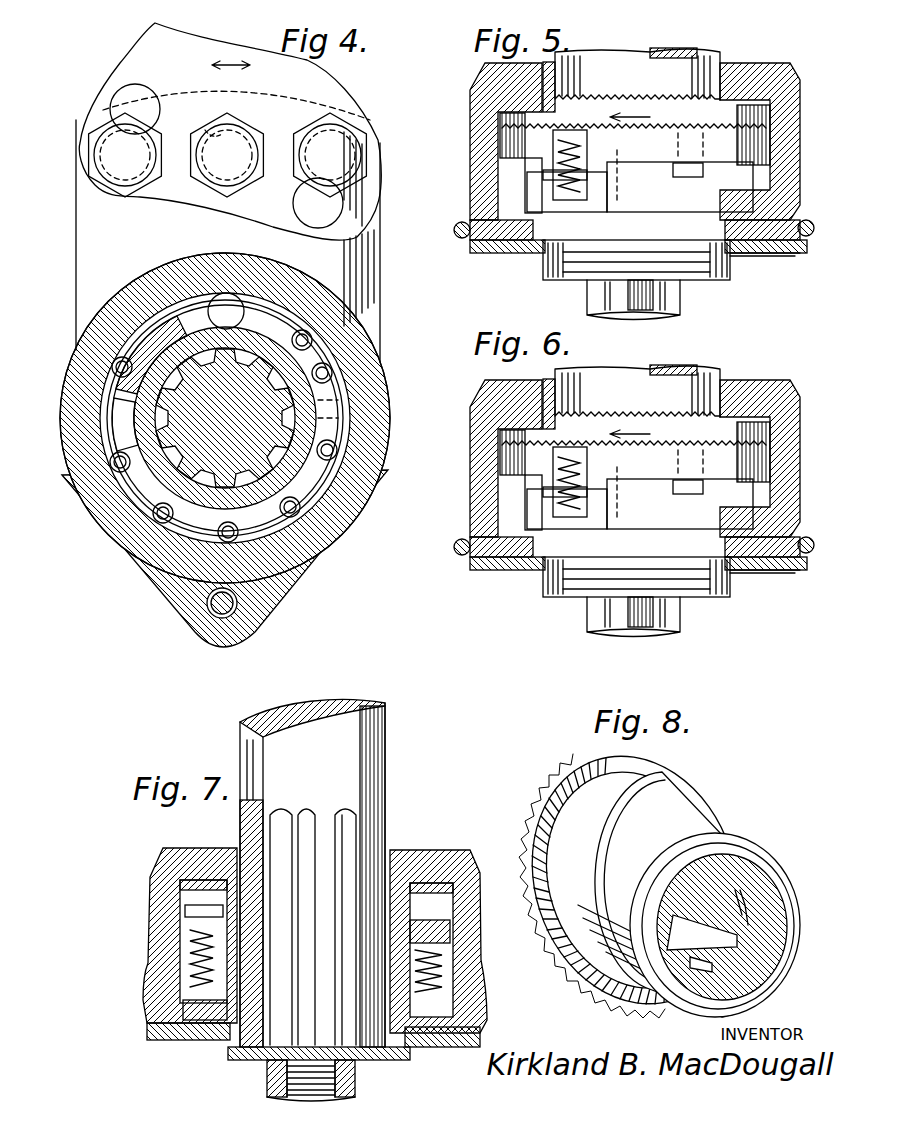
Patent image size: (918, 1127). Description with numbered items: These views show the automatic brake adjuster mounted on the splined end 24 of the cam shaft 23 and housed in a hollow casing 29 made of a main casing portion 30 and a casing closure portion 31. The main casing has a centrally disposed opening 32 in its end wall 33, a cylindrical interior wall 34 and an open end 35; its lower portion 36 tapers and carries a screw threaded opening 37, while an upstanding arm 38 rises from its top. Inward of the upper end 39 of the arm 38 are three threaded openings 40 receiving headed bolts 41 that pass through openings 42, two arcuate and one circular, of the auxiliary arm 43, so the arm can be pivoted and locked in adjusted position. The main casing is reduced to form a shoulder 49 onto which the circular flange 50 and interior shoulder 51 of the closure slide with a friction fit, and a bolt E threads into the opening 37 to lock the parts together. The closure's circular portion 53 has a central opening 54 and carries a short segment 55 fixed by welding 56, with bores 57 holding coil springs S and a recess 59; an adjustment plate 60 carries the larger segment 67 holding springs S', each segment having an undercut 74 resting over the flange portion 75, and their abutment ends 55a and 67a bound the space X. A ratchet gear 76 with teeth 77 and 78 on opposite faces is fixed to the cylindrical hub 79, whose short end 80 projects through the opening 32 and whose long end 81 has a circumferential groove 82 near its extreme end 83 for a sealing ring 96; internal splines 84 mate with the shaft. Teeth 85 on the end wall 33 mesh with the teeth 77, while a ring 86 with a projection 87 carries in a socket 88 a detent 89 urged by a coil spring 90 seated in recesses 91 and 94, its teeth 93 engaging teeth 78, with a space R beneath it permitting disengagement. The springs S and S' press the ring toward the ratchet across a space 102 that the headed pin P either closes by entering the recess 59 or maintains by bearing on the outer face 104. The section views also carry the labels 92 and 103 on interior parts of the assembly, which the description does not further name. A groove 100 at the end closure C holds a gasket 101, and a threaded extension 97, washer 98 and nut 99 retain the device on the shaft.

In FIG. 4, the cam shaft 23 is at (246, 500).
In FIG. 5, the cam shaft 23 is at (700, 52).
In FIG. 6, the cam shaft 23 is at (700, 369).
In FIG. 7, the cam shaft 23 is at (386, 762).
In FIG. 4, the splined end 24 is at (262, 352).
In FIG. 7, the splined end 24 is at (300, 816).
In FIG. 4, the hollow casing 29 is at (386, 454).
In FIG. 5, the hollow casing 29 is at (800, 164).
In FIG. 6, the hollow casing 29 is at (800, 396).
In FIG. 7, the hollow casing 29 is at (470, 852).
In FIG. 4, the main casing portion 30 is at (352, 510).
In FIG. 5, the main casing portion 30 is at (800, 88).
In FIG. 6, the main casing portion 30 is at (800, 421).
In FIG. 7, the main casing portion 30 is at (155, 862).
In FIG. 5, the casing closure portion 31 is at (800, 216).
In FIG. 6, the casing closure portion 31 is at (800, 531).
In FIG. 7, the casing closure portion 31 is at (150, 996).
In FIG. 5, the centrally disposed opening 32 is at (736, 65).
In FIG. 6, the centrally disposed opening 32 is at (736, 382).
In FIG. 7, the centrally disposed opening 32 is at (400, 850).
In FIG. 5, the longitudinal end wall 33 is at (762, 65).
In FIG. 6, the longitudinal end wall 33 is at (762, 382).
In FIG. 7, the longitudinal end wall 33 is at (430, 856).
In FIG. 4, the cylindrical interior wall 34 is at (355, 410).
In FIG. 5, the cylindrical interior wall 34 is at (470, 130).
In FIG. 6, the cylindrical interior wall 34 is at (470, 420).
In FIG. 7, the cylindrical interior wall 34 is at (180, 892).
In FIG. 5, the open end 35 is at (800, 192).
In FIG. 6, the open end 35 is at (800, 506).
In FIG. 7, the open end 35 is at (474, 976).
In FIG. 4, the lower portion 36 is at (272, 598).
In FIG. 4, the screw threaded opening 37 is at (214, 610).
In FIG. 4, the arm 38 is at (378, 312).
In FIG. 4, the upper end 39 is at (330, 96).
In FIG. 4, the threaded openings 40 is at (90, 152).
In FIG. 4, the headed bolts 41 is at (92, 178).
In FIG. 4, the openings 42 is at (108, 108).
In FIG. 4, the auxiliary arm 43 is at (220, 58).
In FIG. 5, the shoulder 49 is at (470, 186).
In FIG. 6, the shoulder 49 is at (470, 501).
In FIG. 7, the shoulder 49 is at (472, 951).
In FIG. 5, the circular flange 50 is at (466, 206).
In FIG. 6, the circular flange 50 is at (466, 526).
In FIG. 7, the circular flange 50 is at (160, 971).
In FIG. 5, the interior shoulder 51 is at (505, 254).
In FIG. 6, the interior shoulder 51 is at (505, 571).
In FIG. 7, the interior shoulder 51 is at (185, 1040).
In FIG. 5, the circular portion 53 is at (468, 244).
In FIG. 6, the circular portion 53 is at (468, 562).
In FIG. 7, the circular portion 53 is at (150, 1030).
In FIG. 5, the centrally disposed opening 54 is at (745, 256).
In FIG. 6, the centrally disposed opening 54 is at (745, 573).
In FIG. 7, the centrally disposed opening 54 is at (430, 1040).
In FIG. 5, the segment 55 is at (800, 140).
In FIG. 6, the segment 55 is at (800, 468).
In FIG. 6, the abutment end 55a is at (640, 566).
In FIG. 5, the welding 56 is at (520, 254).
In FIG. 6, the welding 56 is at (520, 571).
In FIG. 7, the welding 56 is at (205, 1040).
In FIG. 7, the bores 57 is at (366, 1000).
In FIG. 5, the recess 59 is at (704, 172).
In FIG. 6, the recess 59 is at (800, 444).
In FIG. 5, the adjustment plate 60 is at (785, 256).
In FIG. 6, the adjustment plate 60 is at (785, 573).
In FIG. 7, the adjustment plate 60 is at (462, 1040).
In FIG. 6, the segment 67 is at (462, 549).
In FIG. 6, the abutment end 67a is at (475, 570).
In FIG. 5, the undercut 74 is at (730, 216).
In FIG. 6, the undercut 74 is at (730, 533).
In FIG. 7, the undercut 74 is at (402, 1048).
In FIG. 5, the flange portion 75 is at (722, 202).
In FIG. 6, the flange portion 75 is at (725, 521).
In FIG. 7, the flange portion 75 is at (484, 1006).
In FIG. 8, the flange portion 75 is at (530, 986).
In FIG. 5, the ratchet gear 76 is at (620, 97).
In FIG. 6, the ratchet gear 76 is at (615, 415).
In FIG. 7, the ratchet gear 76 is at (180, 912).
In FIG. 8, the ratchet gear 76 is at (560, 986).
In FIG. 5, the ratchet teeth 77 is at (695, 127).
In FIG. 6, the ratchet teeth 77 is at (690, 444).
In FIG. 8, the ratchet teeth 77 is at (548, 806).
In FIG. 5, the ratchet teeth 78 is at (708, 128).
In FIG. 6, the ratchet teeth 78 is at (705, 445).
In FIG. 8, the ratchet teeth 78 is at (586, 864).
In FIG. 4, the cylindrical hub 79 is at (187, 322).
In FIG. 5, the cylindrical hub 79 is at (615, 258).
In FIG. 6, the cylindrical hub 79 is at (600, 600).
In FIG. 7, the cylindrical hub 79 is at (263, 976).
In FIG. 8, the cylindrical hub 79 is at (770, 935).
In FIG. 5, the short extending end 80 is at (698, 58).
In FIG. 6, the short extending end 80 is at (698, 376).
In FIG. 7, the short extending end 80 is at (390, 856).
In FIG. 5, the long end 81 is at (580, 256).
In FIG. 6, the long end 81 is at (580, 573).
In FIG. 7, the long end 81 is at (263, 1006).
In FIG. 8, the long end 81 is at (722, 806).
In FIG. 5, the circumferential groove 82 is at (575, 246).
In FIG. 6, the circumferential groove 82 is at (610, 562).
In FIG. 7, the circumferential groove 82 is at (240, 1060).
In FIG. 8, the circumferential groove 82 is at (738, 832).
In FIG. 5, the extreme end 83 is at (690, 262).
In FIG. 6, the extreme end 83 is at (700, 578).
In FIG. 7, the extreme end 83 is at (375, 1060).
In FIG. 8, the extreme end 83 is at (795, 903).
In FIG. 4, the splines 84 is at (119, 424).
In FIG. 7, the splines 84 is at (263, 956).
In FIG. 8, the splines 84 is at (708, 953).
In FIG. 5, the teeth 85 is at (790, 72).
In FIG. 6, the teeth 85 is at (480, 386).
In FIG. 7, the teeth 85 is at (200, 880).
In FIG. 4, the ring 86 is at (286, 312).
In FIG. 5, the ring 86 is at (715, 108).
In FIG. 6, the ring 86 is at (650, 506).
In FIG. 7, the ring 86 is at (472, 892).
In FIG. 4, the projection 87 is at (118, 394).
In FIG. 5, the projection 87 is at (650, 211).
In FIG. 6, the projection 87 is at (650, 528).
In FIG. 7, the projection 87 is at (175, 1040).
In FIG. 4, the socket 88 is at (112, 372).
In FIG. 5, the socket 88 is at (580, 190).
In FIG. 6, the socket 88 is at (582, 482).
In FIG. 7, the socket 88 is at (190, 956).
In FIG. 5, the detent 89 is at (590, 128).
In FIG. 6, the detent 89 is at (590, 445).
In FIG. 7, the detent 89 is at (263, 912).
In FIG. 4, the coil spring 90 is at (110, 350).
In FIG. 5, the coil spring 90 is at (586, 175).
In FIG. 6, the coil spring 90 is at (586, 492).
In FIG. 7, the coil spring 90 is at (190, 936).
In FIG. 4, the recess 91 is at (118, 335).
In FIG. 5, the recess 91 is at (562, 128).
In FIG. 6, the recess 91 is at (562, 445).
In FIG. 7, the recess 91 is at (263, 926).
In FIG. 5, the recess 92 is at (500, 170).
In FIG. 6, the recess 92 is at (500, 502).
In FIG. 5, the ratchet teeth 93 is at (500, 150).
In FIG. 6, the ratchet teeth 93 is at (500, 466).
In FIG. 5, the recess 94 is at (470, 224).
In FIG. 6, the recess 94 is at (565, 540).
In FIG. 7, the recess 94 is at (175, 1006).
In FIG. 5, the sealing ring 96 is at (545, 266).
In FIG. 6, the sealing ring 96 is at (545, 583).
In FIG. 7, the sealing ring 96 is at (212, 1058).
In FIG. 5, the reduced threaded extension 97 is at (640, 320).
In FIG. 6, the reduced threaded extension 97 is at (645, 638).
In FIG. 7, the reduced threaded extension 97 is at (300, 1100).
In FIG. 5, the washer 98 is at (725, 262).
In FIG. 6, the washer 98 is at (730, 578).
In FIG. 5, the nut 99 is at (670, 314).
In FIG. 6, the nut 99 is at (670, 630).
In FIG. 7, the nut 99 is at (355, 1090).
In FIG. 6, the groove 100 is at (780, 573).
In FIG. 7, the groove 100 is at (150, 1040).
In FIG. 5, the gasket 101 is at (800, 249).
In FIG. 6, the gasket 101 is at (800, 566).
In FIG. 7, the gasket 101 is at (147, 1028).
In FIG. 5, the space 102 is at (676, 206).
In FIG. 6, the space 102 is at (680, 514).
In FIG. 5, the bearing 103 is at (800, 114).
In FIG. 6, the bearing 103 is at (640, 483).
In FIG. 7, the bearing 103 is at (472, 921).
In FIG. 5, the outer face 104 is at (640, 166).
In FIG. 6, the outer face 104 is at (725, 506).
In FIG. 7, the outer face 104 is at (468, 933).
In FIG. 4, the headed pin P is at (210, 306).
In FIG. 5, the headed pin P is at (666, 166).
In FIG. 6, the headed pin P is at (666, 483).
In FIG. 4, the coil springs S is at (260, 414).
In FIG. 6, the coil springs S is at (722, 443).
In FIG. 7, the coil springs S is at (459, 940).
In FIG. 4, the coil springs S' is at (174, 497).
In FIG. 5, the coil springs S' is at (720, 147).
In FIG. 7, the coil springs S' is at (124, 977).
In FIG. 6, the space R is at (560, 510).
In FIG. 7, the space R is at (190, 1062).
In FIG. 4, the bolt E is at (224, 614).
In FIG. 6, the space X is at (607, 612).
In FIG. 7, the end closure C is at (478, 996).